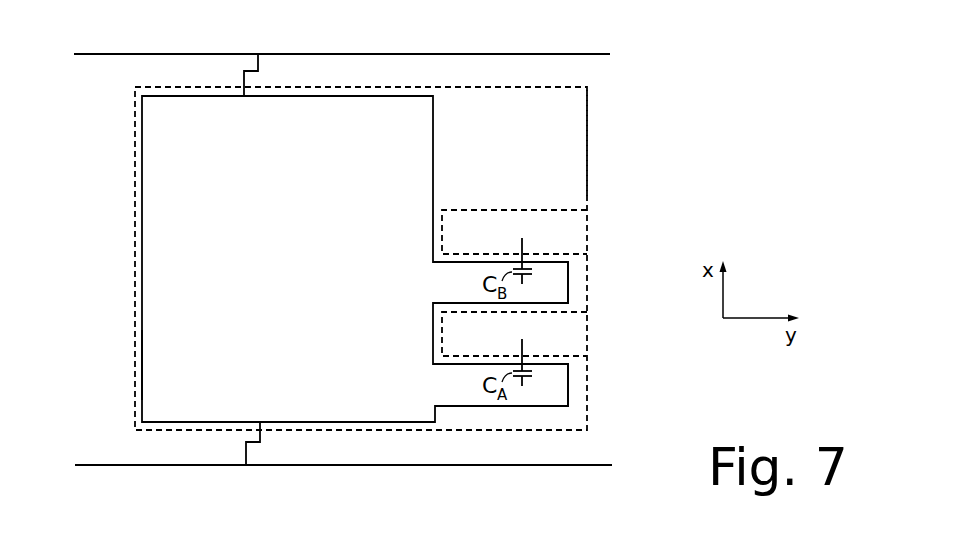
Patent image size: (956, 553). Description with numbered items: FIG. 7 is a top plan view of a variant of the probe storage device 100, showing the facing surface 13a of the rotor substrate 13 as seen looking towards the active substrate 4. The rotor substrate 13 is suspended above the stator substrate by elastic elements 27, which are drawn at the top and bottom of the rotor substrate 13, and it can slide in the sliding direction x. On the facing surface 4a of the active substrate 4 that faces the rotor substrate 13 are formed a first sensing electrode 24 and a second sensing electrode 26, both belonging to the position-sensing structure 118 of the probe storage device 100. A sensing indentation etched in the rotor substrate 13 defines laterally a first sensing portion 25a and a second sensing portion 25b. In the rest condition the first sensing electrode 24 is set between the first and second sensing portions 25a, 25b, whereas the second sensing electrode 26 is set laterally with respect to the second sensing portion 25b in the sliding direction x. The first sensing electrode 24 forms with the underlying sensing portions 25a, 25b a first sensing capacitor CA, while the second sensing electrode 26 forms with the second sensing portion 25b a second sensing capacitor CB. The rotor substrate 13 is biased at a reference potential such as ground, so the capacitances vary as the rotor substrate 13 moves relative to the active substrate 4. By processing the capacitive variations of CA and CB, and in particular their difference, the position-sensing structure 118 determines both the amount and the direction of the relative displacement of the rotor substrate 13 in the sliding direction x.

The antenna arrangement 100 is at (728, 105).
The rotor substrate 13 is at (133, 339).
The facing surface 13a is at (150, 372).
The elastic elements 27 is at (259, 62).
The active substrate 4 is at (588, 118).
The facing surface 4a is at (556, 112).
The second sensing electrode 26 is at (570, 210).
The first sensing electrode 24 is at (578, 353).
The second sensing portion 25b is at (558, 273).
The first sensing portion 25a is at (565, 396).
The position-sensing structure 118 is at (601, 288).